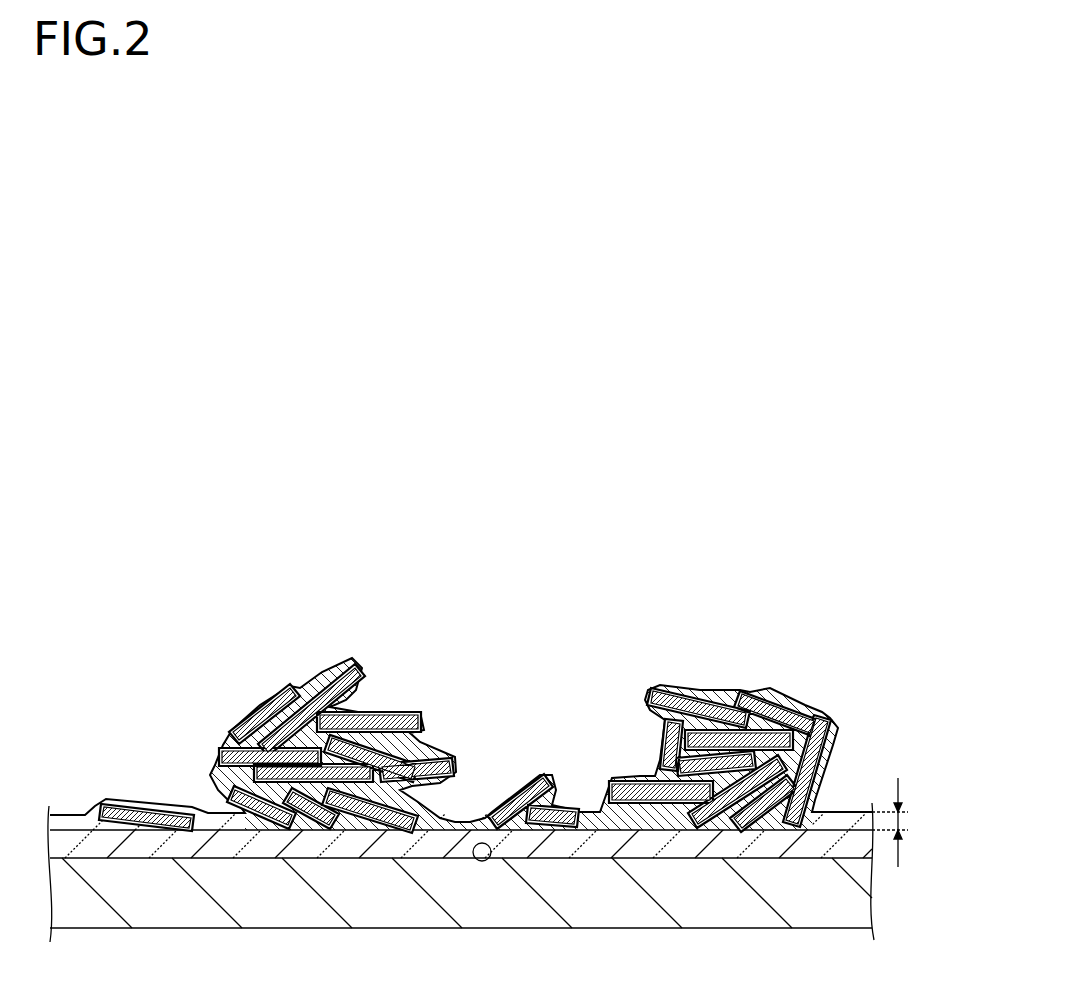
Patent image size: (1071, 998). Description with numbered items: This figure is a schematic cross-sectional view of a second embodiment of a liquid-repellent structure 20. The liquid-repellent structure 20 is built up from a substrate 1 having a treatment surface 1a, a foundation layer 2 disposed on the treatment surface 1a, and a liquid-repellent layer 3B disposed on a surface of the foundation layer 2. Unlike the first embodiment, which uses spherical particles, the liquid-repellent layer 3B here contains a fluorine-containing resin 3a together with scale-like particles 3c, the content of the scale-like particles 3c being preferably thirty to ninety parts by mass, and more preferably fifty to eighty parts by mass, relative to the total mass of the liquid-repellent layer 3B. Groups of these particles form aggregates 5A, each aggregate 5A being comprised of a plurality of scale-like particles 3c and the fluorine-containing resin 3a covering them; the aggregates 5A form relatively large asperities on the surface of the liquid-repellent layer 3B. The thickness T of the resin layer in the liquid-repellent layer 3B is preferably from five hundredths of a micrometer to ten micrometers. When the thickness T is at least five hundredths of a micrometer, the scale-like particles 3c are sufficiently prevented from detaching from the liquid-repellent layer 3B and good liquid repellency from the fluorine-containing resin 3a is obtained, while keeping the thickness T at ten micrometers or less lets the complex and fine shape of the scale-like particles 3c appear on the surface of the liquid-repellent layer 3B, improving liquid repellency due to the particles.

The substrate 1 is at (752, 912).
The treatment surface 1a is at (471, 860).
The foundation layer 2 is at (70, 842).
The fluorine-containing resin 3a is at (300, 697).
The scale-like particles 3c is at (438, 762).
The liquid-repellent layer 3B is at (845, 736).
The aggregate 5A is at (414, 618).
The liquid-repellent structure 20 is at (845, 529).
The thickness of the resin layer T is at (899, 822).